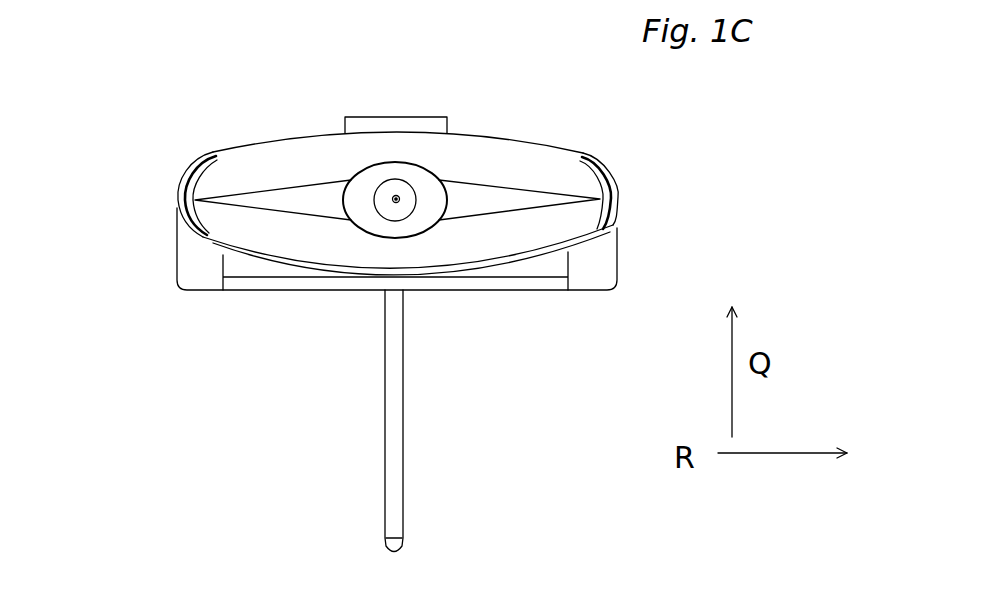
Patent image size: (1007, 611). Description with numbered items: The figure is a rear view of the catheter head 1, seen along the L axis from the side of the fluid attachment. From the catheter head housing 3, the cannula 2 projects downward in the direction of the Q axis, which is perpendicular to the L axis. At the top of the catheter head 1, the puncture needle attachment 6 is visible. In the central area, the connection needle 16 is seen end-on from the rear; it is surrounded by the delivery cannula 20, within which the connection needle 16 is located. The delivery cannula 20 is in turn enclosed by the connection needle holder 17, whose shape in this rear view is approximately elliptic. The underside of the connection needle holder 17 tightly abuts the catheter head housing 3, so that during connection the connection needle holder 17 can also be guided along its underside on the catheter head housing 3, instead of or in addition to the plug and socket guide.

The catheter head 1 is at (185, 142).
The cannula 2 is at (392, 453).
The catheter head housing 3 is at (473, 280).
The puncture needle attachment 6 is at (393, 123).
The connection needle 16 is at (392, 204).
The connection needle holder 17 is at (508, 163).
The delivery cannula 20 is at (418, 210).